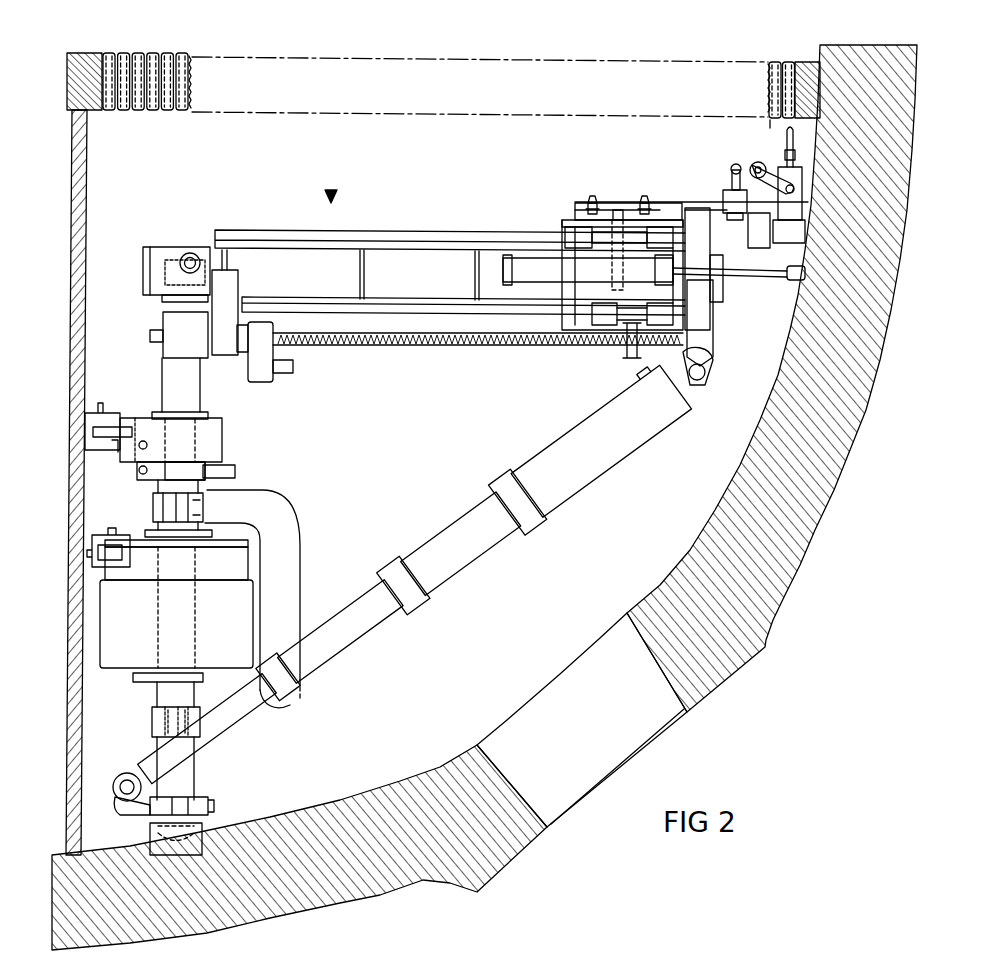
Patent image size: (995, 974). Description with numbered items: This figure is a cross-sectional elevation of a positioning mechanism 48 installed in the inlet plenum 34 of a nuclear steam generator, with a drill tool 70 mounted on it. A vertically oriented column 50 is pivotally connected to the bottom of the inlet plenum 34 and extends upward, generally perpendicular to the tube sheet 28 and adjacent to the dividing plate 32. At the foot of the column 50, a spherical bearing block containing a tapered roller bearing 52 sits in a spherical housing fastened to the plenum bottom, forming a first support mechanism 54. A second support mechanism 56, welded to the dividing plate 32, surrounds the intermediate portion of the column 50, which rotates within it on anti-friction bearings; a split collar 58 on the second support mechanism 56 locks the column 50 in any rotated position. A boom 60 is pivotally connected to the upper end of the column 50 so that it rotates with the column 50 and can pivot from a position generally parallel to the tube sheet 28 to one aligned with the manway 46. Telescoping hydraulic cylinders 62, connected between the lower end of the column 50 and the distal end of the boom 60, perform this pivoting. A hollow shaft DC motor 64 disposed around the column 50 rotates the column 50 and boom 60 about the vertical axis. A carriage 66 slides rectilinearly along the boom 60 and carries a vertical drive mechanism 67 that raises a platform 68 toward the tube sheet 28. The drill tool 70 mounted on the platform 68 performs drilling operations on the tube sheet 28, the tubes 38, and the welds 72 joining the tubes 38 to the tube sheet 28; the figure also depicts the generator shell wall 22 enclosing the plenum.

The vessel shell wall 22 is at (852, 428).
The tube sheet 28 is at (455, 73).
The dividing plate 32 is at (86, 212).
The inlet plenum 34 is at (510, 604).
The tubes 38 is at (170, 53).
The manway 46 is at (682, 708).
The positioning mechanism 48 is at (332, 190).
The column 50 is at (197, 396).
The tapered roller bearing 52 is at (200, 832).
The first support mechanism 54 is at (150, 838).
The second support mechanism 56 is at (222, 440).
The split collar 58 is at (236, 478).
The boom 60 is at (413, 273).
The telescoping hydraulic cylinders 62 is at (603, 478).
The hollow shaft DC motor 64 is at (235, 628).
The carriage 66 is at (575, 257).
The vertical drive mechanism 67 is at (620, 210).
The platform 68 is at (602, 206).
The drill tool 70 is at (706, 158).
The welds 72 is at (770, 120).